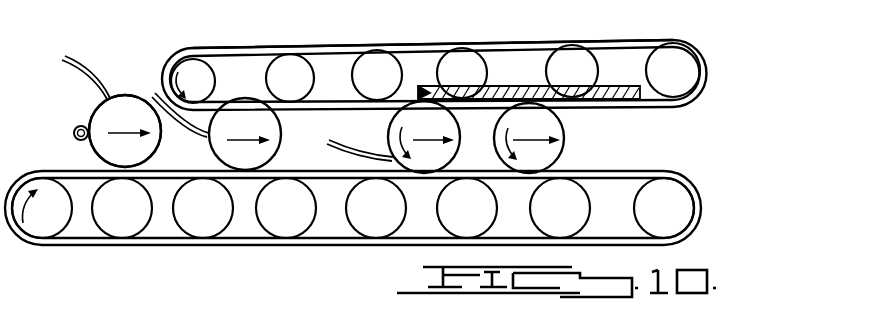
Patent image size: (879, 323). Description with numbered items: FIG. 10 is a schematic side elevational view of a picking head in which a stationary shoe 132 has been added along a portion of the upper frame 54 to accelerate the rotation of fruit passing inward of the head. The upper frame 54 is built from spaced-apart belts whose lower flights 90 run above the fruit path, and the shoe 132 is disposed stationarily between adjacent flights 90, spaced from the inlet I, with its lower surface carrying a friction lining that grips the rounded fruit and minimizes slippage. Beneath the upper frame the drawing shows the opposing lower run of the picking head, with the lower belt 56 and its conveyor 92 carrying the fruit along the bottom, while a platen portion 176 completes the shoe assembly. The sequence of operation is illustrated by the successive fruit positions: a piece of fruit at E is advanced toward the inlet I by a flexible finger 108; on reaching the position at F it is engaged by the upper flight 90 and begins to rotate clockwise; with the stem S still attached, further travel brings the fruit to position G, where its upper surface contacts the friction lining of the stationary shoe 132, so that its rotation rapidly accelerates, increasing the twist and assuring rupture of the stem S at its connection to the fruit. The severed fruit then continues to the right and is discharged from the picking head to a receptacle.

The upper frame 54 is at (359, 44).
The lower conveyor belt 56 is at (117, 226).
The flights 90 is at (662, 109).
The lower conveyor 92 is at (648, 172).
The flexible finger 108 is at (78, 128).
The stationary shoe 132 is at (514, 98).
The platen lower plate 176 is at (610, 106).
The fruit position E is at (126, 96).
The fruit position F is at (243, 110).
The fruit position G is at (424, 114).
The inlet I is at (195, 145).
The stem S is at (372, 157).